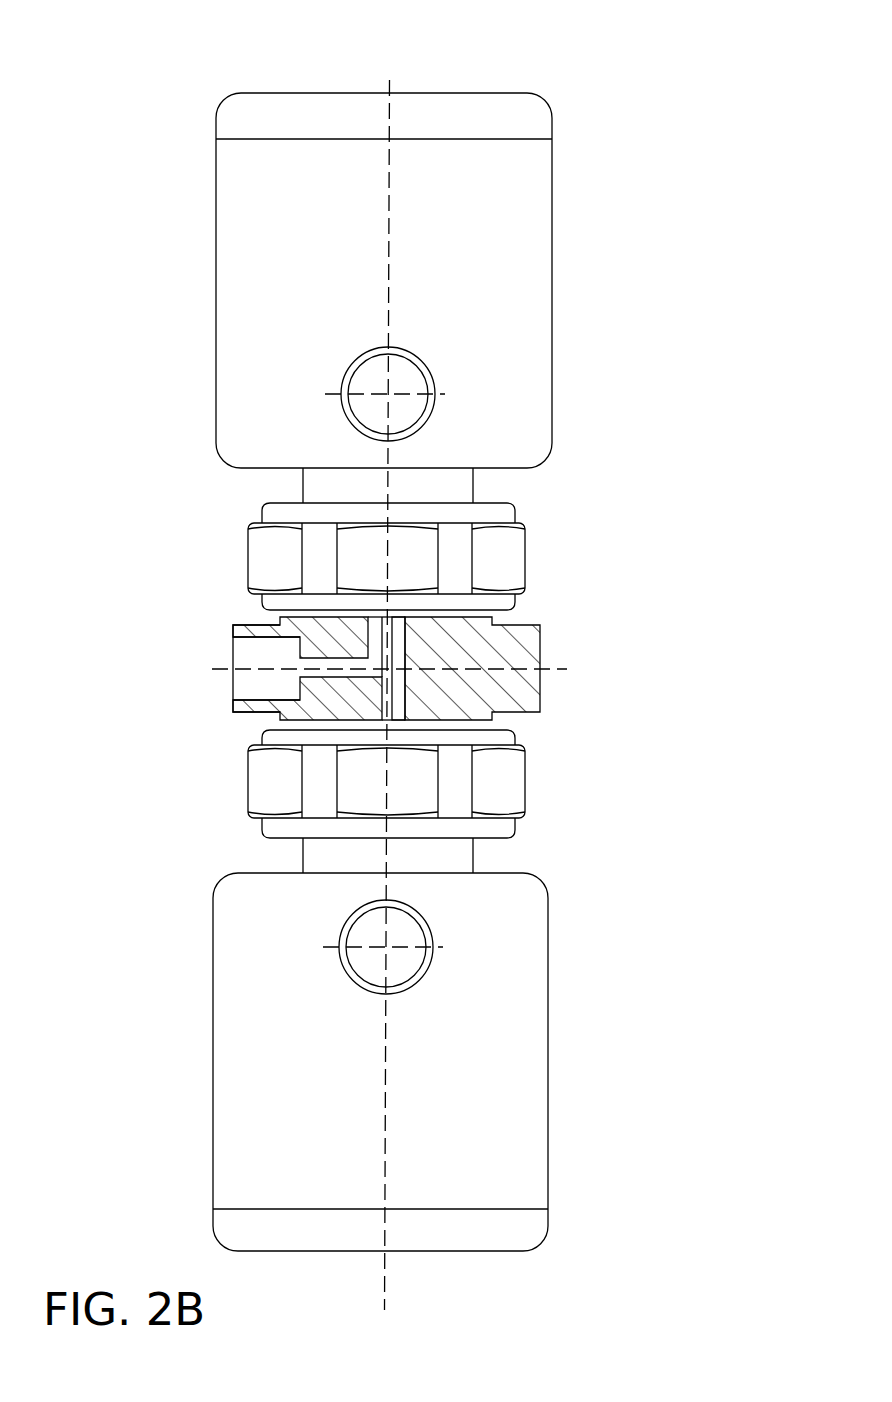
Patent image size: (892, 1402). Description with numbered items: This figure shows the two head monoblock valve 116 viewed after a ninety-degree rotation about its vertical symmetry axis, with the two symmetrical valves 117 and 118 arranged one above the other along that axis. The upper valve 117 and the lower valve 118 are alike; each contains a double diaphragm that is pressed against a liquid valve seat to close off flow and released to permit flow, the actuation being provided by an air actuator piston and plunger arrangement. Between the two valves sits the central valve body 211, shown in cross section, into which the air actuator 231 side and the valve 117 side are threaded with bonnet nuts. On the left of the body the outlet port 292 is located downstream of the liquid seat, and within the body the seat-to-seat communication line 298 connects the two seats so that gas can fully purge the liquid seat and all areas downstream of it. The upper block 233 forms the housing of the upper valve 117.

The two head monoblock valve 116 is at (216, 52).
The valve 117 is at (652, 321).
The upper block 233 is at (552, 330).
The seat-to-seat communication line 298 is at (410, 653).
The valve body 211 is at (525, 712).
The outlet port 292 is at (232, 680).
The air actuator 231 is at (549, 1071).
The valve 118 is at (649, 1091).